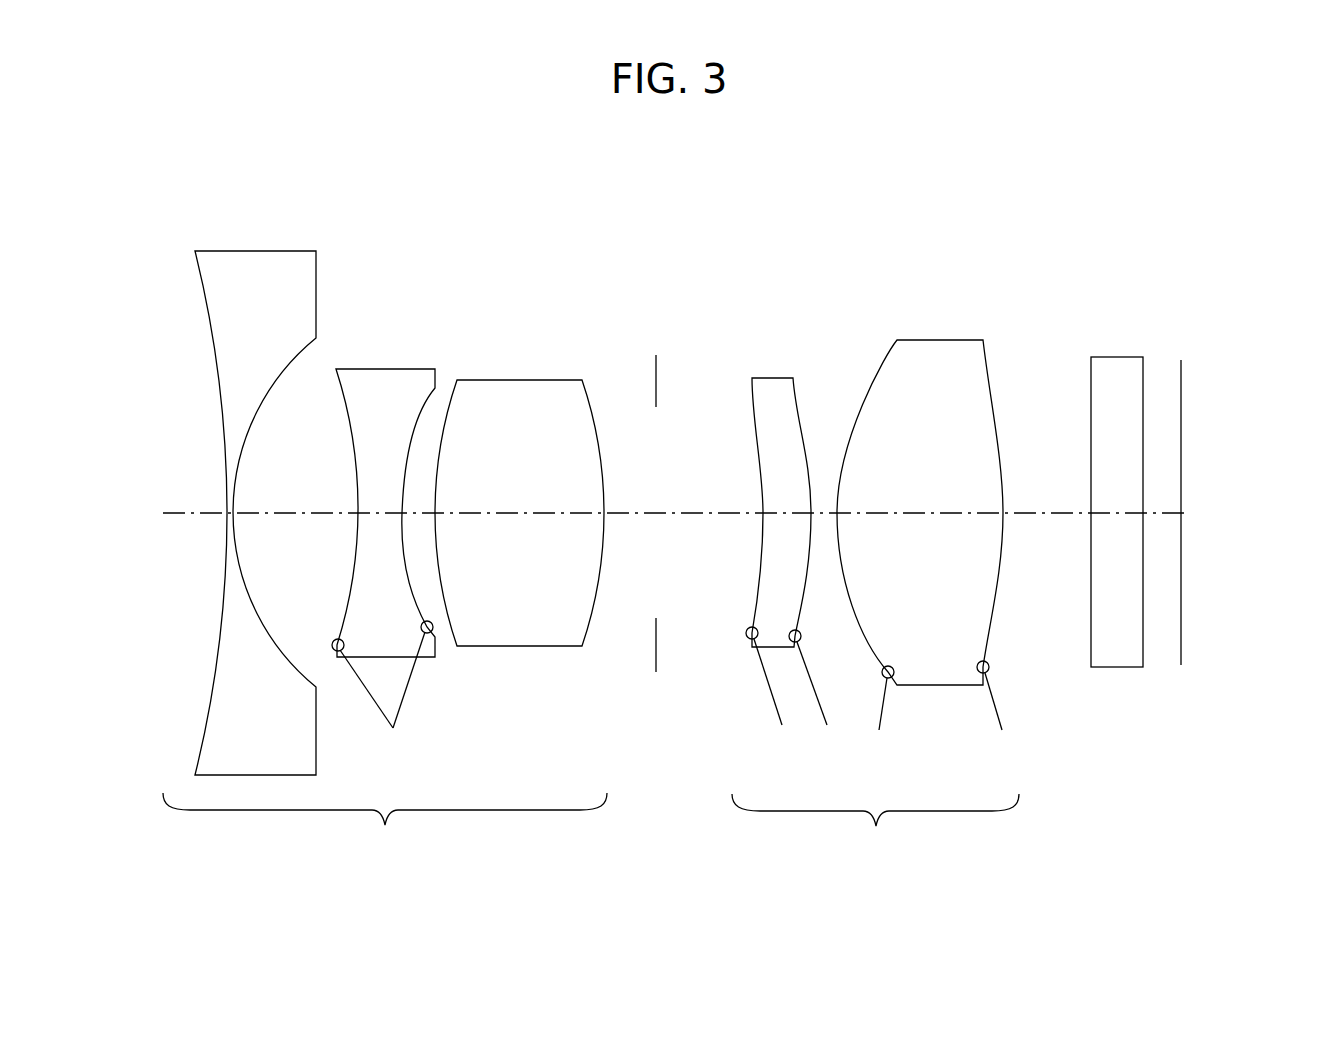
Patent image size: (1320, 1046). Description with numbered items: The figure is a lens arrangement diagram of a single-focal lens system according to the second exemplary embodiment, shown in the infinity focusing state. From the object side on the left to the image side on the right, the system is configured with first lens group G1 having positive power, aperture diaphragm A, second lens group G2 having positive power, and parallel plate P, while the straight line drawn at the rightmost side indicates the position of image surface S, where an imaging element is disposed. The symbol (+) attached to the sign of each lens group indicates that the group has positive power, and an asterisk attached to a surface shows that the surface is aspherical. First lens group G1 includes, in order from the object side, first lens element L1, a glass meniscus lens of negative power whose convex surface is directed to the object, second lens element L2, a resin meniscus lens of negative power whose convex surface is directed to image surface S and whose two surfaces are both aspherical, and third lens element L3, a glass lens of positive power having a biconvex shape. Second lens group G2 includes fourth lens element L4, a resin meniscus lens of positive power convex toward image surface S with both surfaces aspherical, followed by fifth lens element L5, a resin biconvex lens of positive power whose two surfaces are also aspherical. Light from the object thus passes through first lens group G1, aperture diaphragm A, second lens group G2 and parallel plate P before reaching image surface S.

The first lens element L1 is at (258, 262).
The second lens element L2 is at (389, 385).
The third lens element L3 is at (522, 400).
The aperture diaphragm A is at (656, 355).
The fourth lens element L4 is at (768, 390).
The fifth lens element L5 is at (937, 358).
The parallel plate P is at (1115, 367).
The image surface S is at (1181, 407).
The first lens group G1 is at (385, 828).
The second lens group G2 is at (875, 828).